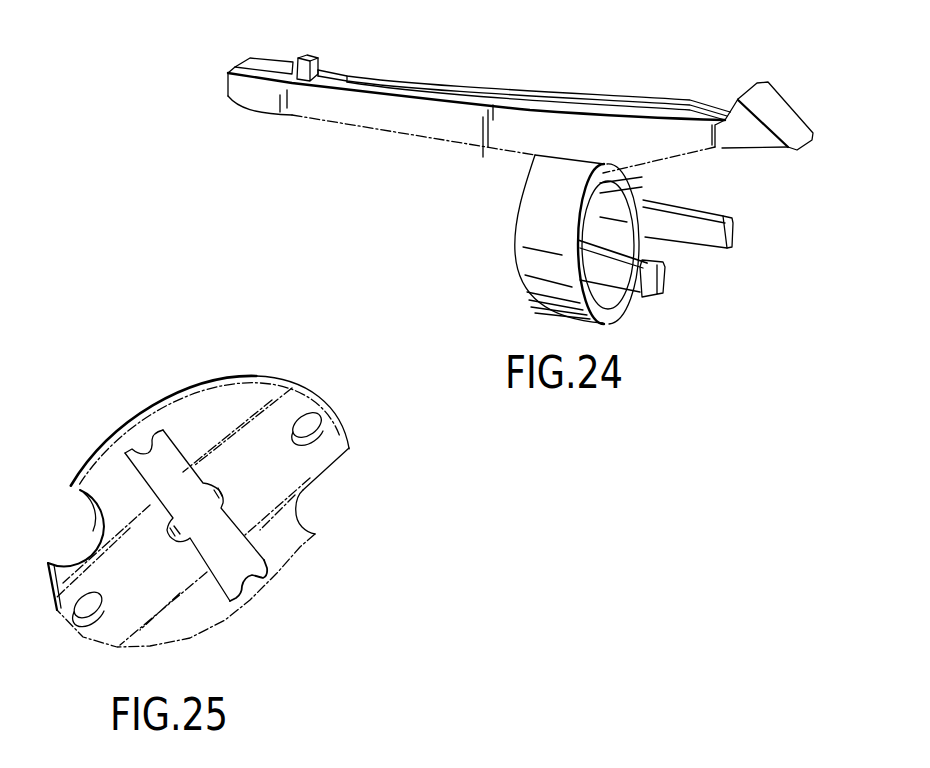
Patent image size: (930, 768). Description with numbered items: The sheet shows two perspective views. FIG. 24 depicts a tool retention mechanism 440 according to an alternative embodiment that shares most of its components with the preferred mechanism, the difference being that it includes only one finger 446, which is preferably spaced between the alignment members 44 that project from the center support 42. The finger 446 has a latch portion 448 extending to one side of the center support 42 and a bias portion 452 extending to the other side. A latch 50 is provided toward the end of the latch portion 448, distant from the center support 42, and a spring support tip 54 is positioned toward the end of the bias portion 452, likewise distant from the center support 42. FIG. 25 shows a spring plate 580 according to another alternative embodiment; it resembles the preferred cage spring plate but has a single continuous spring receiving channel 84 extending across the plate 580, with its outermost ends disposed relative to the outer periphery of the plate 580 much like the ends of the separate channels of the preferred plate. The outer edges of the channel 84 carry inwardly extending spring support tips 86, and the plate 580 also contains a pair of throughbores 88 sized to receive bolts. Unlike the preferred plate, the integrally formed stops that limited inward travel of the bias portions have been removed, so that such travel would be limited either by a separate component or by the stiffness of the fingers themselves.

In FIG. 24, the tool retention mechanism 440 is at (253, 135).
In FIG. 24, the finger 446 is at (385, 132).
In FIG. 24, the latch portion 448 is at (653, 130).
In FIG. 24, the bias portion 452 is at (350, 102).
In FIG. 24, the spring support tip 54 is at (308, 57).
In FIG. 24, the latch 50 is at (780, 108).
In FIG. 24, the center support 42 is at (530, 228).
In FIG. 24, the alignment members 44 is at (698, 218).
In FIG. 25, the spring plate 580 is at (375, 496).
In FIG. 25, the spring receiving channel 84 is at (237, 547).
In FIG. 25, the spring support tip 86 is at (145, 440).
In FIG. 25, the throughbores 88 is at (325, 425).